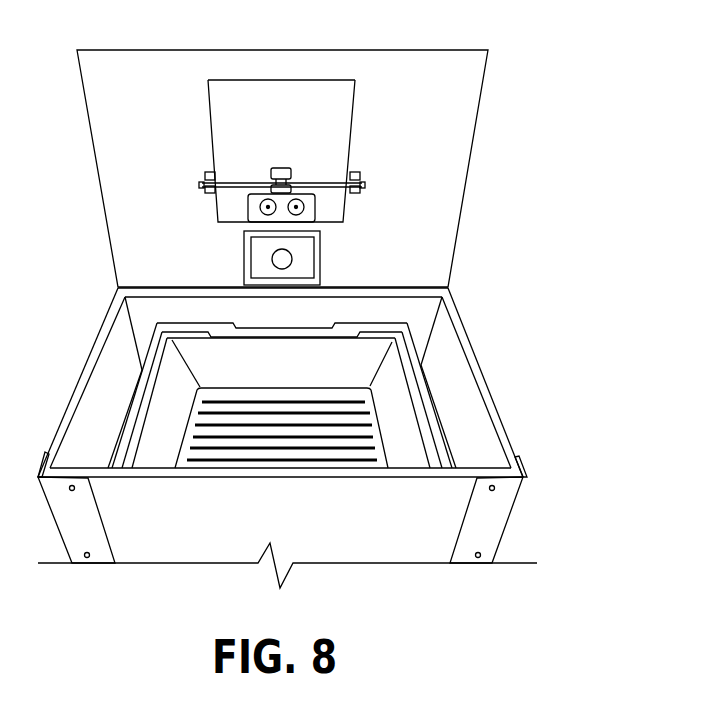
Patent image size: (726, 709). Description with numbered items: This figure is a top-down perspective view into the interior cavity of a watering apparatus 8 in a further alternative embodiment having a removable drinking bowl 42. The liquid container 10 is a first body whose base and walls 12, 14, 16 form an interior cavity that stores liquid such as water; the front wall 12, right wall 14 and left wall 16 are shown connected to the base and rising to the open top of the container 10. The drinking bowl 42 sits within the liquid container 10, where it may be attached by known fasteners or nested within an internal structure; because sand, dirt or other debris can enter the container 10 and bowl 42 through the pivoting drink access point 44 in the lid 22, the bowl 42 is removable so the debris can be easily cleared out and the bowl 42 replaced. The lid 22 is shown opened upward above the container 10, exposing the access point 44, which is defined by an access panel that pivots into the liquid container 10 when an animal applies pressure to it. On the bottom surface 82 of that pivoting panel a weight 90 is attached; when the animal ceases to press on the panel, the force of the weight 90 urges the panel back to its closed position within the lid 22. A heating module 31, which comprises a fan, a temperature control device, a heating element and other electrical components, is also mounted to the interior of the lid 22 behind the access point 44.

The watering apparatus 8 is at (500, 532).
The liquid container 10 is at (38, 478).
The wall 12 is at (349, 550).
The wall 14 is at (485, 380).
The wall 16 is at (74, 395).
The lid 22 is at (405, 70).
The heating module 31 is at (243, 268).
The drinking bowl 42 is at (228, 476).
The access point 44 is at (239, 84).
The bottom surface 82 is at (290, 97).
The weight 90 is at (317, 203).